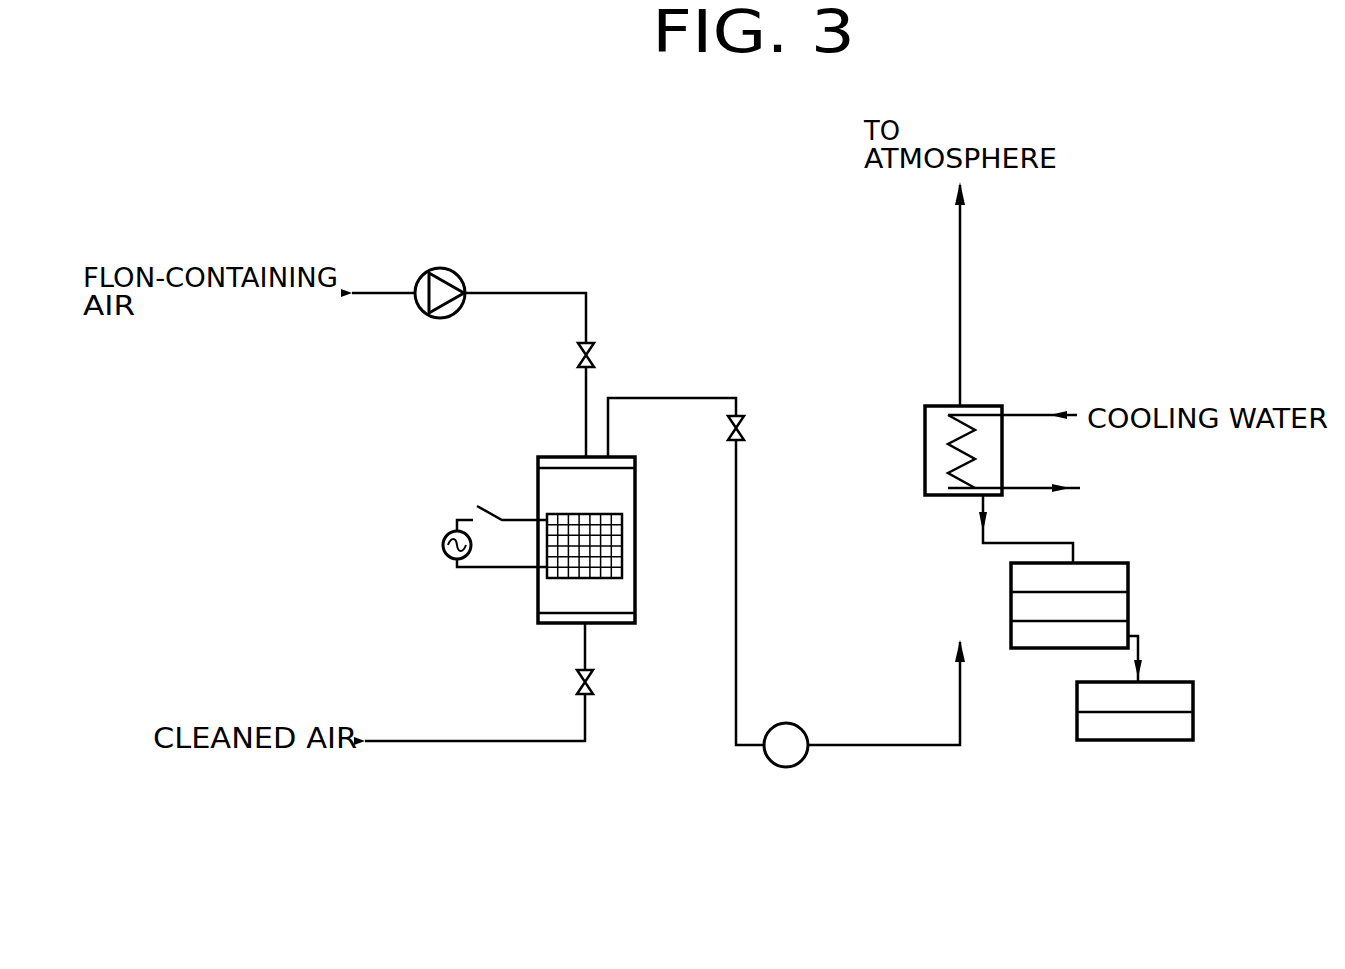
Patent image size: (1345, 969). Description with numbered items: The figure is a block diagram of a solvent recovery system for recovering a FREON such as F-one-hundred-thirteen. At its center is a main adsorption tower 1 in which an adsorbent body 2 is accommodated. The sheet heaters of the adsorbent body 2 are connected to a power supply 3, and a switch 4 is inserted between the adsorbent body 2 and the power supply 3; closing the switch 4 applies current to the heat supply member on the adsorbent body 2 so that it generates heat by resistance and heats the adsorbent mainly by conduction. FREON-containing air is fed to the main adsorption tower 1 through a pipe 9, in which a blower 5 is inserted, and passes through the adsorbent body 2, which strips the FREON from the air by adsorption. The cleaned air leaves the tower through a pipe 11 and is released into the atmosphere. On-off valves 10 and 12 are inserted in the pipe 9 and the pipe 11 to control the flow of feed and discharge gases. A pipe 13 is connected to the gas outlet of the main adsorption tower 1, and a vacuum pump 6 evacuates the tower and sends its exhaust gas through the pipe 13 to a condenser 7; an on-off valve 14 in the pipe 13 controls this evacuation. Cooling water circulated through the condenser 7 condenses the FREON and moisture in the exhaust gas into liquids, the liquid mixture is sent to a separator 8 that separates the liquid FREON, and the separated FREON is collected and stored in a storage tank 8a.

The main adsorption tower 1 is at (635, 480).
The adsorbent body 2 is at (622, 541).
The power supply 3 is at (443, 545).
The switch 4 is at (498, 516).
The blower 5 is at (450, 317).
The vacuum pump 6 is at (790, 722).
The condenser 7 is at (925, 450).
The separator 8 is at (1128, 573).
The storage tank 8a is at (1090, 740).
The pipe 9 is at (525, 293).
The on-off valve 10 is at (594, 353).
The pipe 11 is at (506, 750).
The on-off valve 12 is at (577, 677).
The pipe 13 is at (738, 548).
The on-off valve 14 is at (744, 425).